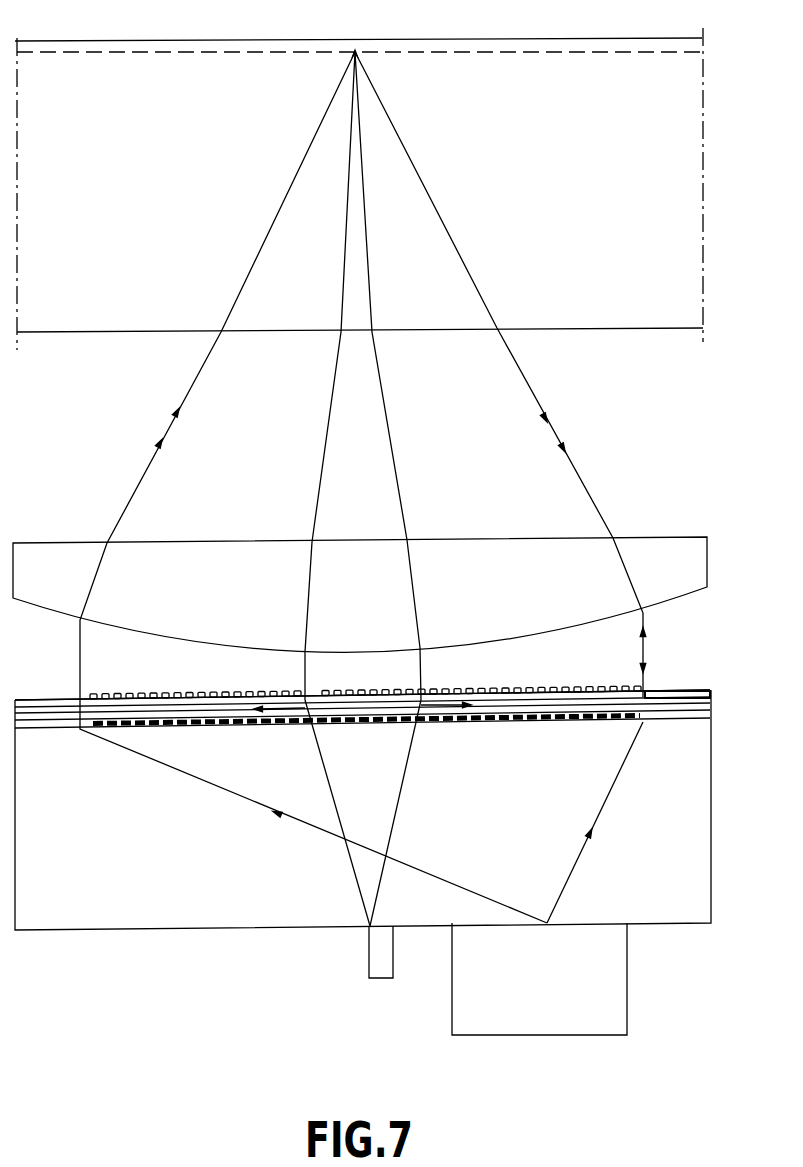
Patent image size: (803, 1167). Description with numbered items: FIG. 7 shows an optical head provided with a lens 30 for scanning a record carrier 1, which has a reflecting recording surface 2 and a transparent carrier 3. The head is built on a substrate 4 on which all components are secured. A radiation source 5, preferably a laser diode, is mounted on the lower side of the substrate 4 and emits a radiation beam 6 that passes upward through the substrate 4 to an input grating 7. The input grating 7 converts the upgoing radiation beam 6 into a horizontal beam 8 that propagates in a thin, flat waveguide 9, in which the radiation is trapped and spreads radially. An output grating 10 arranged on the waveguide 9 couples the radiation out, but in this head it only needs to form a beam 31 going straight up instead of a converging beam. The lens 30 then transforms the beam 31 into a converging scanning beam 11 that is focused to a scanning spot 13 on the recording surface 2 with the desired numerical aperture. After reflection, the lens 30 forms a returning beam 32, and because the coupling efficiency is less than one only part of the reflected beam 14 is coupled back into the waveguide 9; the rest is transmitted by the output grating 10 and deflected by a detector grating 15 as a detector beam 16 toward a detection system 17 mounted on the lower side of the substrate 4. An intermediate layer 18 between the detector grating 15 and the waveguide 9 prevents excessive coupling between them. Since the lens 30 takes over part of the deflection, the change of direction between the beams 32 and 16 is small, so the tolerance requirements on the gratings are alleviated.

The record carrier 1 is at (748, 28).
The recording surface 2 is at (686, 52).
The transparent carrier 3 is at (690, 278).
The substrate 4 is at (703, 894).
The radiation source 5 is at (382, 984).
The radiation beam 6 is at (360, 902).
The input grating 7 is at (360, 690).
The horizontal beam 8 is at (272, 690).
The waveguide 9 is at (718, 700).
The output grating 10 is at (622, 690).
The scanning beam 11 is at (548, 412).
The scanning spot 13 is at (358, 47).
The reflected beam 14 is at (566, 450).
The detector grating 15 is at (610, 723).
The detector beam 16 is at (603, 810).
The detection system 17 is at (620, 1018).
The intermediate layer 18 is at (712, 712).
The lens 30 is at (693, 566).
The beam going straight up 31 is at (651, 642).
The returning beam 32 is at (649, 662).